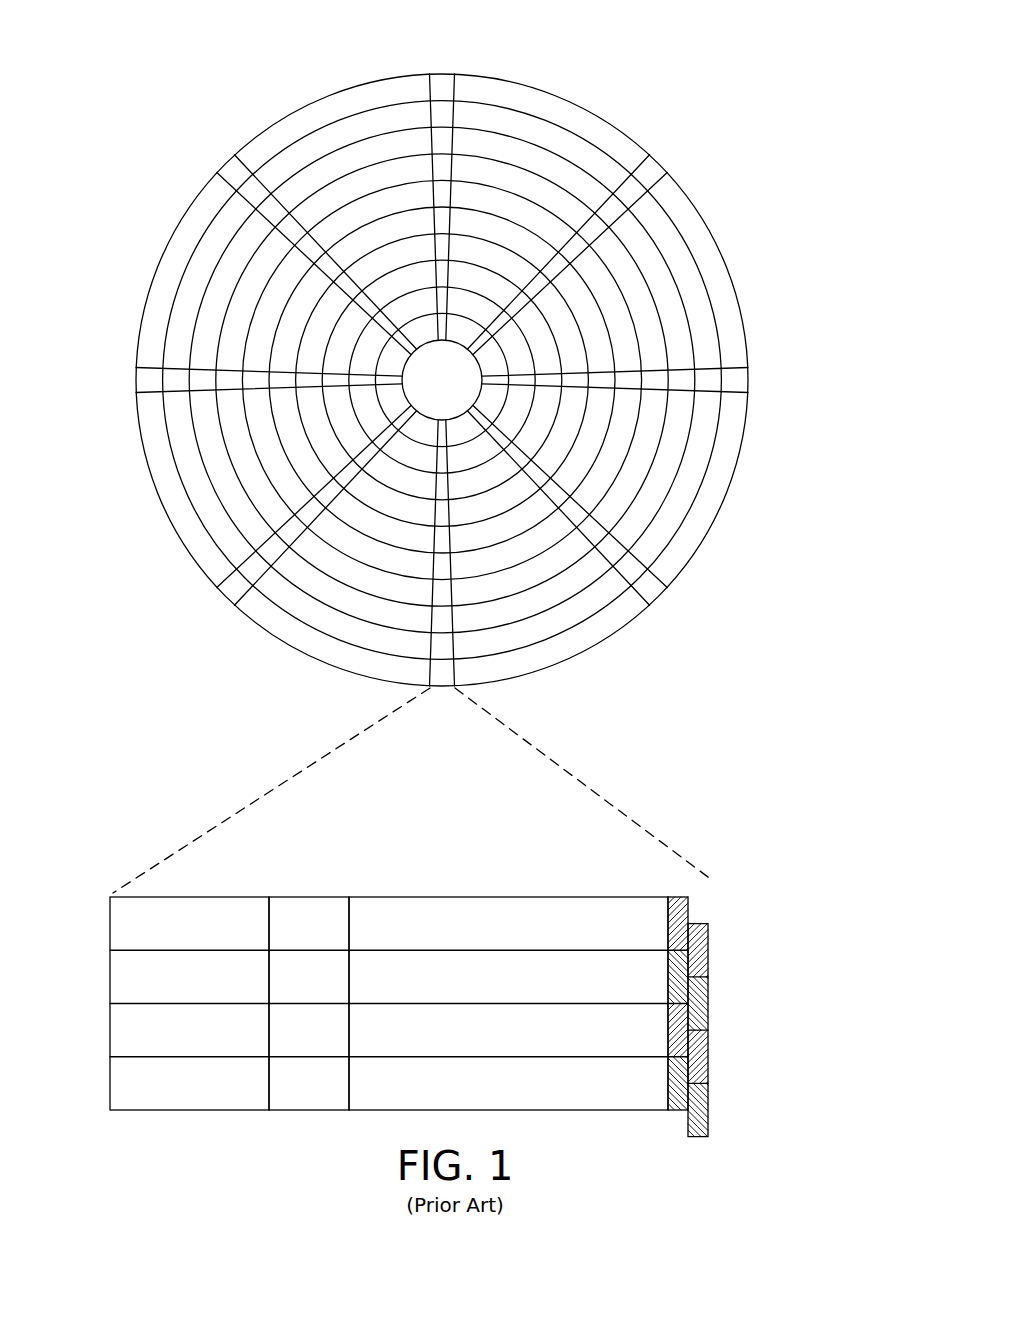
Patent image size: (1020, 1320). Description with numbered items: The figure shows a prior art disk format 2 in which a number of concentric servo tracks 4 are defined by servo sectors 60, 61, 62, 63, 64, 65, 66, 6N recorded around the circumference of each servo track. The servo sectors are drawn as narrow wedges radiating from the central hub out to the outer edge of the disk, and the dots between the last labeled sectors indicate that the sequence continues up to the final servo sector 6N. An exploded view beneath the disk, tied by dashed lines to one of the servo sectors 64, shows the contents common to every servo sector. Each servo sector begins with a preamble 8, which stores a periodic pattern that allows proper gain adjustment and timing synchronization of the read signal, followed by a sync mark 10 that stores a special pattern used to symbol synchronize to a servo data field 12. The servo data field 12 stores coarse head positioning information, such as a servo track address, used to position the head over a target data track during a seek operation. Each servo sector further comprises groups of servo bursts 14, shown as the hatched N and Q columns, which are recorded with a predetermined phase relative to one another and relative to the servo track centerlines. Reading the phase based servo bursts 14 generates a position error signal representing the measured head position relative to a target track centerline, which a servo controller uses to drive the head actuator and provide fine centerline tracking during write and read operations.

The disk format 2 is at (212, 75).
The servo tracks 4 is at (549, 135).
The servo sector 60 is at (443, 75).
The servo sector 61 is at (650, 170).
The servo sector 62 is at (742, 381).
The servo sector 63 is at (653, 592).
The servo sector 64 is at (303, 752).
The servo sector 65 is at (230, 592).
The servo sector 66 is at (142, 380).
The servo sector 6N is at (235, 165).
The preamble 8 is at (197, 897).
The sync mark 10 is at (311, 897).
The servo data field 12 is at (498, 897).
The servo bursts 14 is at (710, 892).